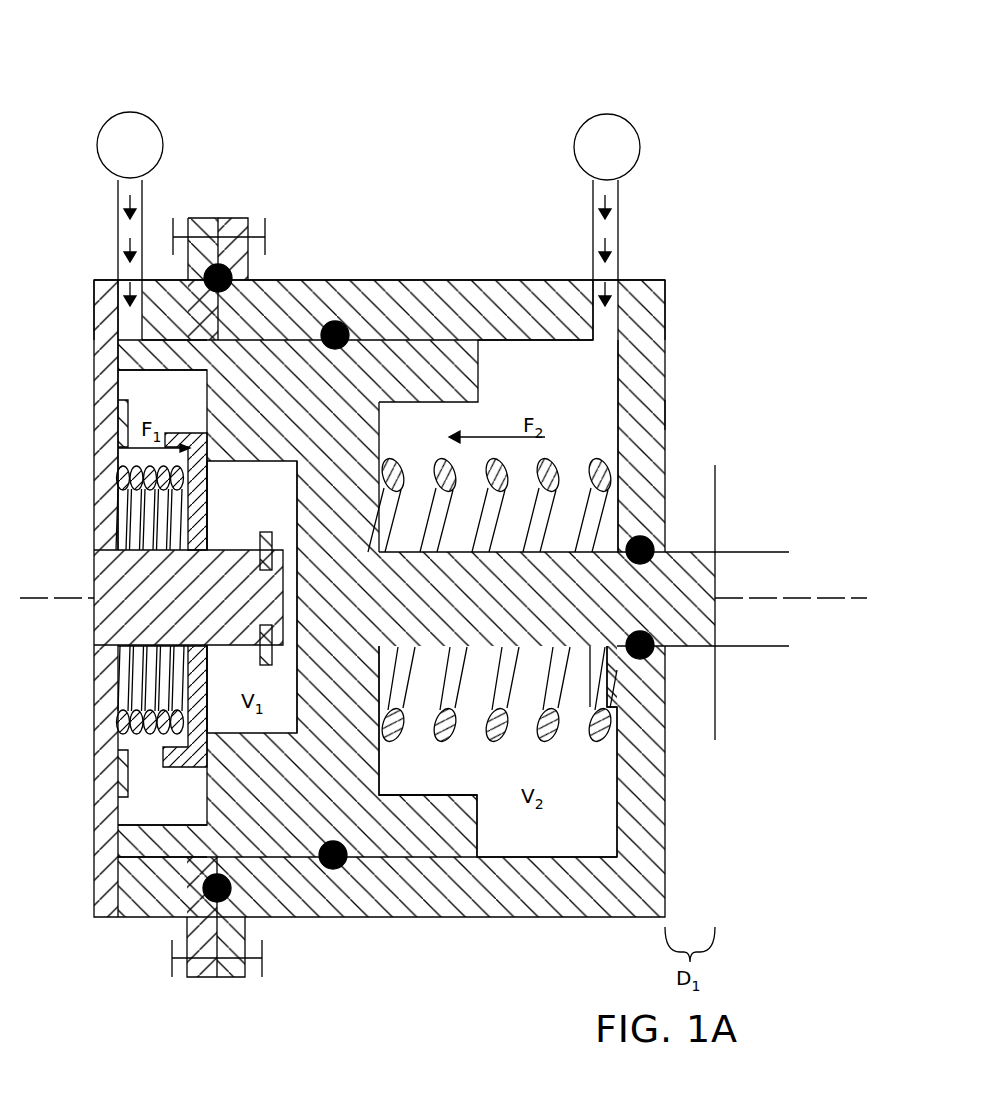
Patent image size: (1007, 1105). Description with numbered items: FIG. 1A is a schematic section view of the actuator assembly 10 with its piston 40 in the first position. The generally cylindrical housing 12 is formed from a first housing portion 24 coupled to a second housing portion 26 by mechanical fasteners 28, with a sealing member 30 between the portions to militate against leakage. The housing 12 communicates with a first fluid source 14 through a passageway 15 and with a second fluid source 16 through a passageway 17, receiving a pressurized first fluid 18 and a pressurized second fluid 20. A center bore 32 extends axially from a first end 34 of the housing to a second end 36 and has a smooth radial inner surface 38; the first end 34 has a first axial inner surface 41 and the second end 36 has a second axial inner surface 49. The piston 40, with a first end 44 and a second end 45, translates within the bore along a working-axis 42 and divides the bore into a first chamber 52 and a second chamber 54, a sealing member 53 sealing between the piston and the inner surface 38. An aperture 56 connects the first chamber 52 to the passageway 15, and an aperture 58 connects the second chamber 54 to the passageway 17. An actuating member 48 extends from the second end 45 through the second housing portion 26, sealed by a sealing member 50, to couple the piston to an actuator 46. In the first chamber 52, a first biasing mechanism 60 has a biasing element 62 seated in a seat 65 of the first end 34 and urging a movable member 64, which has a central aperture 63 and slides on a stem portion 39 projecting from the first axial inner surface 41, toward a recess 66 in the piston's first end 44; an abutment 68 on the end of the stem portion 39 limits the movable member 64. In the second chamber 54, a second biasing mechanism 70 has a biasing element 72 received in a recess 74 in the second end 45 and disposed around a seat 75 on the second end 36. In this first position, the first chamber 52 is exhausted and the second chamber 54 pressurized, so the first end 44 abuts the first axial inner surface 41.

The actuator assembly 10 is at (91, 62).
The housing 12 is at (316, 276).
The first fluid source 14 is at (102, 122).
The passageway 15 is at (118, 206).
The second fluid source 16 is at (580, 128).
The passageway 17 is at (593, 210).
The first fluid 18 is at (118, 240).
The second fluid 20 is at (618, 242).
The first housing portion 24 is at (95, 279).
The second housing portion 26 is at (665, 279).
The mechanical fasteners 28 is at (185, 240).
The sealing member 30 is at (212, 265).
The center bore 32 is at (160, 372).
The first end 34 is at (118, 316).
The second end 36 is at (665, 415).
The radial inner surface 38 is at (410, 332).
The stem portion 39 is at (150, 530).
The piston 40 is at (440, 325).
The first axial inner surface 41 is at (122, 388).
The working-axis 42 is at (855, 596).
The first end 44 is at (116, 850).
The second end 45 is at (480, 832).
The actuator 46 is at (739, 540).
The actuating member 48 is at (600, 522).
The second axial inner surface 49 is at (612, 398).
The sealing member 50 is at (648, 540).
The first chamber 52 is at (130, 456).
The sealing member 53 is at (330, 320).
The second chamber 54 is at (585, 380).
The aperture 56 is at (165, 352).
The aperture 58 is at (612, 330).
The first biasing mechanism 60 is at (253, 462).
The biasing element 62 is at (128, 757).
The central aperture 63 is at (230, 600).
The movable member 64 is at (150, 705).
The seat 65 is at (122, 672).
The recess 66 is at (122, 800).
The abutment 68 is at (266, 532).
The second biasing mechanism 70 is at (598, 765).
The biasing element 72 is at (620, 740).
The recess 74 is at (440, 788).
The seat 75 is at (603, 683).